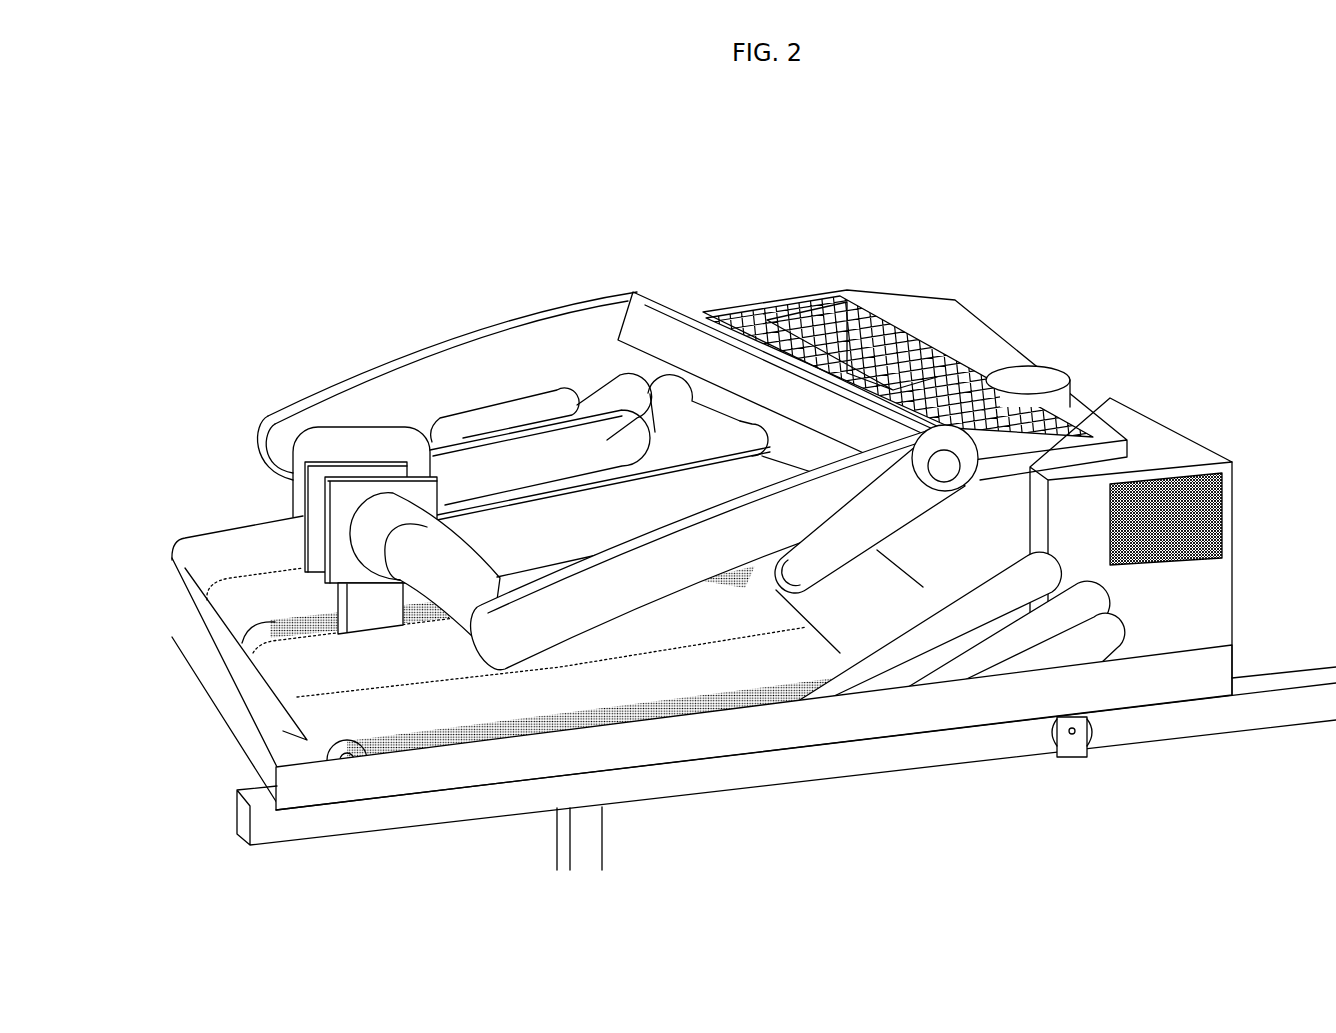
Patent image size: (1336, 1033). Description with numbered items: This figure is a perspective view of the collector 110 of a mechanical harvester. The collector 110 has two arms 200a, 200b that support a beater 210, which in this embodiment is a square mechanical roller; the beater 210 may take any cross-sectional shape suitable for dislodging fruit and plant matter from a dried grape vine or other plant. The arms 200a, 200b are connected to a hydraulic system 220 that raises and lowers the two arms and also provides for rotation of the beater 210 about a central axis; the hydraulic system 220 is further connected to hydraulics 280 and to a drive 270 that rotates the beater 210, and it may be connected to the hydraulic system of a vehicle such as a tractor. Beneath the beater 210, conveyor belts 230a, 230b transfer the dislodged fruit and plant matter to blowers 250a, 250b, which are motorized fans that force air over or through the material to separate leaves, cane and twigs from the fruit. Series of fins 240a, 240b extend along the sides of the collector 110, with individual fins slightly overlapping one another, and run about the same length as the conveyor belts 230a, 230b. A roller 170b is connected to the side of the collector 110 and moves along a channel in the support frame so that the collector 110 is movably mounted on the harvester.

The collector 110 is at (1070, 150).
The roller 170b is at (1081, 776).
The arm 200a is at (585, 627).
The arm 200b is at (368, 373).
The beater 210 is at (657, 308).
The hydraulic system 220 is at (477, 423).
The conveyor belt 230a is at (307, 692).
The conveyor belt 230b is at (203, 578).
The series of fins 240a is at (1000, 661).
The series of fins 240b is at (612, 392).
The blower 250a is at (1218, 513).
The blower 250b is at (988, 320).
The drive 270 is at (920, 507).
The hydraulics 280 is at (1033, 368).